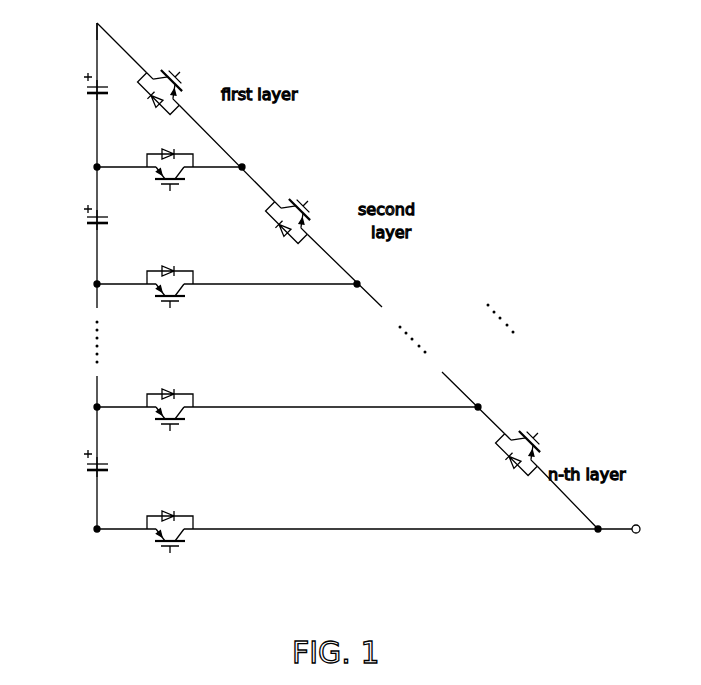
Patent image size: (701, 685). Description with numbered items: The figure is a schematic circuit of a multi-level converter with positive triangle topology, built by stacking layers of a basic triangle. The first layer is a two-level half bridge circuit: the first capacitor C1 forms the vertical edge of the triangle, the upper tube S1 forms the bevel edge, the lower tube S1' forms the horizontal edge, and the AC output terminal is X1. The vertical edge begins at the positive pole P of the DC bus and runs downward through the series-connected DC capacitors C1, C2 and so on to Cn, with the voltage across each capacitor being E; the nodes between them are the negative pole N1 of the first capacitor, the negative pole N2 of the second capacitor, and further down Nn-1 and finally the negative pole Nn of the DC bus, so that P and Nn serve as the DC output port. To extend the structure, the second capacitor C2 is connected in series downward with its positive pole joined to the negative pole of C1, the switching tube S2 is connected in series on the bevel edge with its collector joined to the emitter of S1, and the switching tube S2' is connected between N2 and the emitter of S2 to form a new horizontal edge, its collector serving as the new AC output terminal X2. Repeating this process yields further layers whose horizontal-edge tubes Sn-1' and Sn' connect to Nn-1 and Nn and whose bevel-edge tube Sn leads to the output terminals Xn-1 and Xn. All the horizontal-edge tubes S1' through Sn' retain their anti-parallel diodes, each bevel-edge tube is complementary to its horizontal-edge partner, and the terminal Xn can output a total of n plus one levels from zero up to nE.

The positive pole of the DC bus P is at (80, 30).
The first capacitor C1 is at (77, 90).
The second capacitor C2 is at (77, 218).
The n-th DC capacitor Cn is at (77, 466).
The voltage across each capacitor E is at (112, 280).
The negative pole of the first capacitor N1 is at (86, 168).
The negative pole of the second capacitor N2 is at (86, 285).
The negative pole of the (n-1)-th capacitor Nn-1 is at (79, 404).
The negative pole of the DC bus Nn is at (85, 526).
The AC output terminal of the first layer X1 is at (254, 168).
The AC output terminal of the second layer X2 is at (369, 284).
The AC output terminal of the (n-1)-th layer Xn-1 is at (498, 407).
The AC output terminal of the n-th layer Xn is at (610, 521).
The first switching tube S1 is at (169, 87).
The third switching tube S2 is at (298, 216).
The n-th switching tube Sn is at (528, 448).
The second switching tube S1' is at (183, 174).
The fourth switching tube S2' is at (183, 291).
The (n-1)-th horizontal-edge switching tube Sn-1' is at (188, 413).
The (n+1)-th switching tube Sn' is at (184, 527).